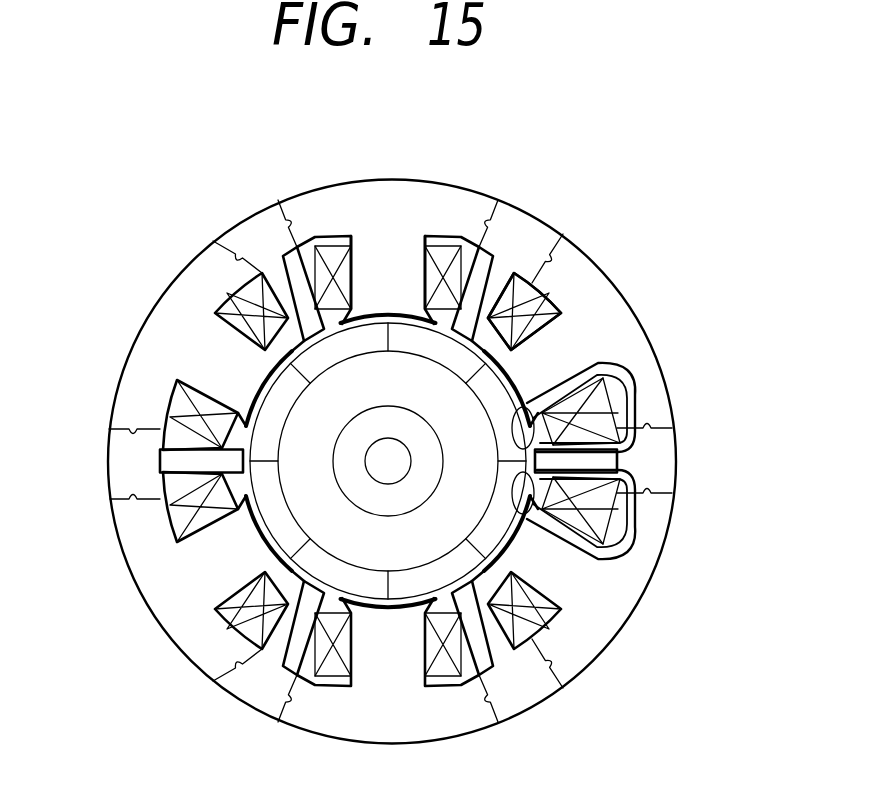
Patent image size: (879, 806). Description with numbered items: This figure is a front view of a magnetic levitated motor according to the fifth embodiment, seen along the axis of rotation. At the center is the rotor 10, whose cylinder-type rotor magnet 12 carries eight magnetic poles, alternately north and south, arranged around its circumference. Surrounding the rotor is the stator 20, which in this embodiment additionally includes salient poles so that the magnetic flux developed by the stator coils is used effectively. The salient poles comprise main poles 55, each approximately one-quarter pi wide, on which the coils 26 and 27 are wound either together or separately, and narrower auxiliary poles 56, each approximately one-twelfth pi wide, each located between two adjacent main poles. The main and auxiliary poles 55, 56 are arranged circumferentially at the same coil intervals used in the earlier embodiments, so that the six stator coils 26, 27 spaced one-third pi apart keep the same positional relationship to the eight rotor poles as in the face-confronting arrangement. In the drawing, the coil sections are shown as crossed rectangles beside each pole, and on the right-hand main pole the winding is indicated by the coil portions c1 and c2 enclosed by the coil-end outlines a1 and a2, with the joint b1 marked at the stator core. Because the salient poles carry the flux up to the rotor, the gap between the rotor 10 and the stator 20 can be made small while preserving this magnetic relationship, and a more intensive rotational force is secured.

The rotor 10 is at (284, 431).
The rotor magnet 12 is at (298, 473).
The stator 20 is at (392, 442).
The stator coil 26 is at (601, 292).
The stator coil 27 is at (524, 311).
The main pole 55 is at (393, 199).
The auxiliary pole 56 is at (519, 274).
The coil end a1 is at (581, 401).
The coil end a2 is at (581, 523).
The core joint b1 is at (673, 455).
The coil c1 is at (634, 402).
The coil c2 is at (629, 535).